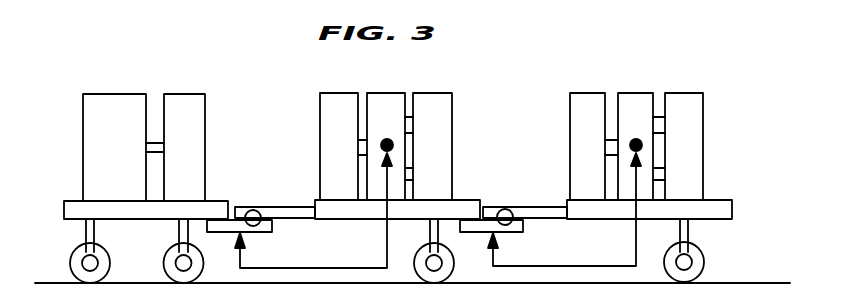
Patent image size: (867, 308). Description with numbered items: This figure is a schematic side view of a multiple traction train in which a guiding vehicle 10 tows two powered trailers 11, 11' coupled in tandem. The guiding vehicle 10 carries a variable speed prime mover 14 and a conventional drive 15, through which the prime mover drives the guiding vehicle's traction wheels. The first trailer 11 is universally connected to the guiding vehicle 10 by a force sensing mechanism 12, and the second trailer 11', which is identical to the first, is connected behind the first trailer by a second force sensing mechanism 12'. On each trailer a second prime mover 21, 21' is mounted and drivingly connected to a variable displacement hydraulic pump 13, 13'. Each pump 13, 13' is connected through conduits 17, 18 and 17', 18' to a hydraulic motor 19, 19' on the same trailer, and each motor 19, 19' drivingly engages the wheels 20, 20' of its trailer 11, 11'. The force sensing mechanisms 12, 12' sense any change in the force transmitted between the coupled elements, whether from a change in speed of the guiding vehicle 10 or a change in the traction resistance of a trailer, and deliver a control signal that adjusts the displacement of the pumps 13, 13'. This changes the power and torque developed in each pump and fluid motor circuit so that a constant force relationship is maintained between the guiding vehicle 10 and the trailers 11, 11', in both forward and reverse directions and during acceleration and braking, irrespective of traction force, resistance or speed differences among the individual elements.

The guiding vehicle 10 is at (60, 211).
The trailer 11 is at (413, 188).
The second trailer 11' is at (665, 188).
The force sensing mechanism 12 is at (265, 231).
The force sensing mechanism 12' is at (518, 231).
The variable displacement hydraulic pump 13 is at (325, 164).
The variable displacement hydraulic pump 13' is at (577, 161).
The variable speed prime mover 14 is at (113, 100).
The drive 15 is at (190, 104).
The conduit 17 is at (427, 138).
The conduit 17' is at (678, 135).
The conduit 18 is at (426, 181).
The conduit 18' is at (677, 181).
The hydraulic motor 19 is at (454, 146).
The hydraulic motor 19' is at (708, 139).
The wheels 20 is at (453, 251).
The wheels 20' is at (705, 251).
The second prime mover 21 is at (337, 130).
The second prime mover 21' is at (587, 129).